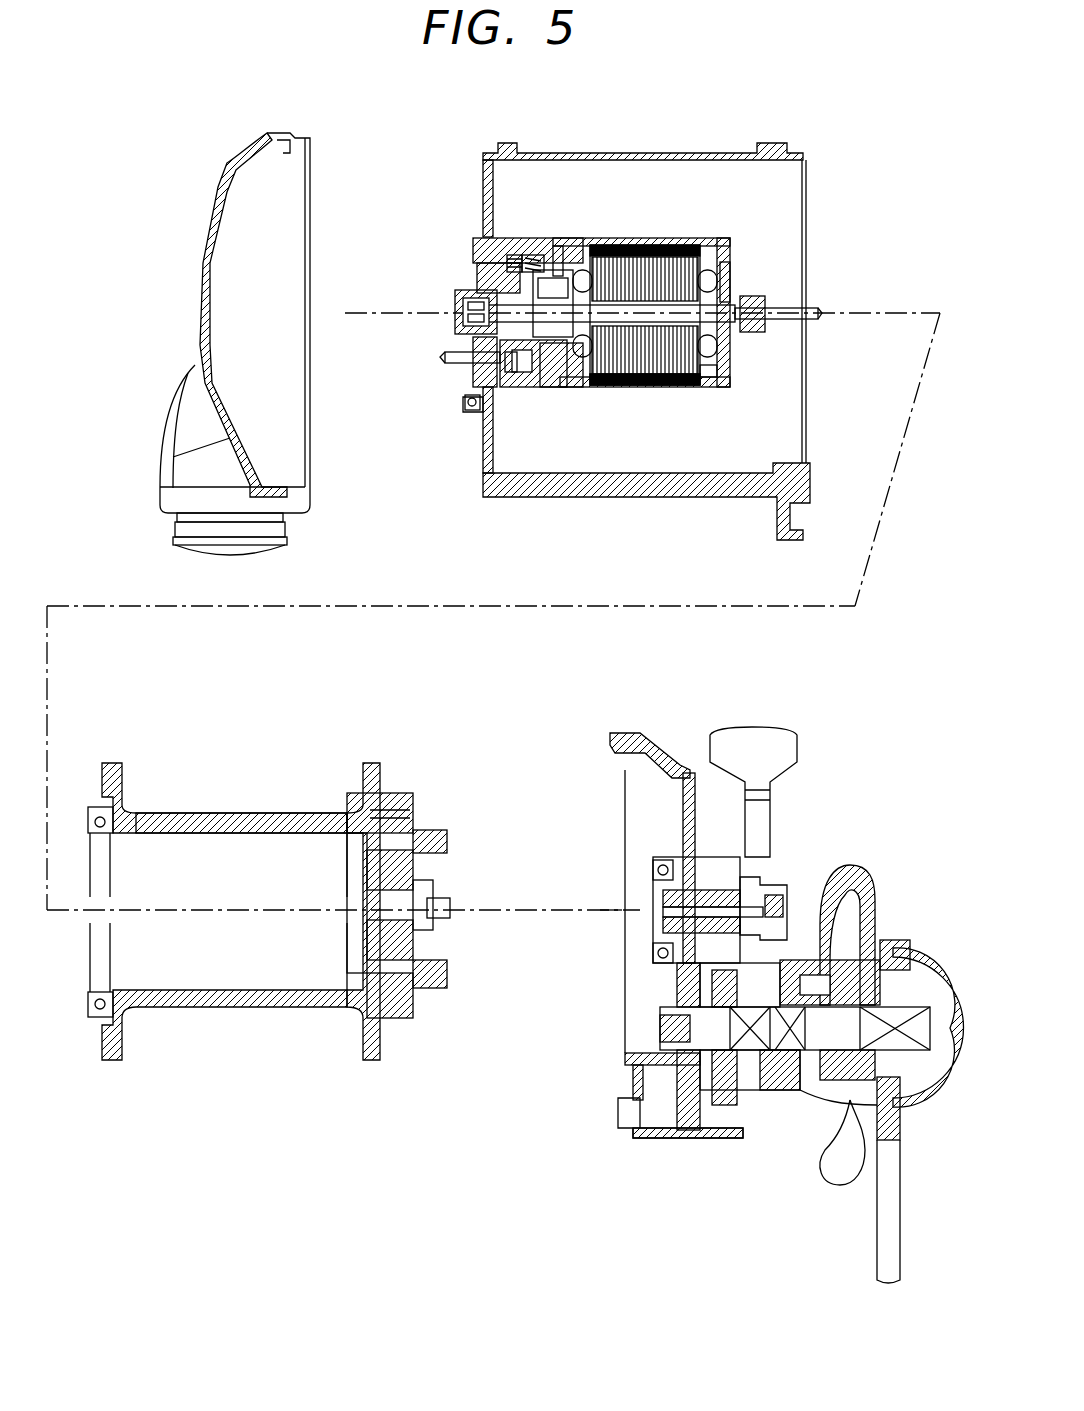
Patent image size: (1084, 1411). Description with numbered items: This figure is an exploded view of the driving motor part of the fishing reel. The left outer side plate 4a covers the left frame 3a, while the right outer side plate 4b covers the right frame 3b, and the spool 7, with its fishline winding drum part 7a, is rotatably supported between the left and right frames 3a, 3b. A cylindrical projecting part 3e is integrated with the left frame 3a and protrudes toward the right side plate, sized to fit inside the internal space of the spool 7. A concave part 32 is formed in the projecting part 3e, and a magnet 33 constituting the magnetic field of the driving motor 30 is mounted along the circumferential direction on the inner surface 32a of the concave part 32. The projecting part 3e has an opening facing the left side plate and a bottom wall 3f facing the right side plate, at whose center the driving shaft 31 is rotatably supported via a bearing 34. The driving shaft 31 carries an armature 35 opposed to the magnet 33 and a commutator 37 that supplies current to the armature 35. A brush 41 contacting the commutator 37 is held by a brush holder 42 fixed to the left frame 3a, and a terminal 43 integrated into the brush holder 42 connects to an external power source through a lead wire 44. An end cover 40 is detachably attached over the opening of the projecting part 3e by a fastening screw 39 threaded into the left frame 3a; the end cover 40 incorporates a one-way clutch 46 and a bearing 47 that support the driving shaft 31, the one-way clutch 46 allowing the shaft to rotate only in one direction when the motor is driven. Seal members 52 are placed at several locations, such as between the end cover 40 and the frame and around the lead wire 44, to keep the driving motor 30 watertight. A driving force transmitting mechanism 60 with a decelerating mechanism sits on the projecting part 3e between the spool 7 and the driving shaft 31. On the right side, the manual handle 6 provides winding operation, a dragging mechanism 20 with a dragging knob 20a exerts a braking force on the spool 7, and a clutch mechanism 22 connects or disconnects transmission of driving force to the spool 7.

The left frame 3a is at (485, 437).
The right frame 3b is at (705, 772).
The projecting part 3e is at (560, 250).
The bottom wall 3f is at (738, 376).
The left outer side plate 4a is at (205, 238).
The right outer side plate 4b is at (672, 762).
The manual handle 6 is at (892, 1180).
The spool 7 is at (160, 813).
The fishline winding drum part 7a is at (245, 813).
The dragging mechanism 20 is at (805, 968).
The dragging knob 20a is at (842, 1178).
The clutch mechanism 22 is at (728, 868).
The driving motor 30 is at (683, 215).
The driving shaft 31 is at (785, 312).
The concave part 32 is at (620, 245).
The inner surface 32a is at (698, 378).
The magnet 33 is at (640, 388).
The bearing 34 is at (765, 332).
The armature 35 is at (722, 275).
The commutator 37 is at (565, 400).
The fastening screw 39 is at (512, 255).
The end cover 40 is at (475, 240).
The brush 41 is at (545, 400).
The brush holder 42 is at (530, 258).
The terminal 43 is at (528, 400).
The lead wire 44 is at (470, 368).
The one-way clutch 46 is at (477, 285).
The bearing 47 is at (457, 322).
The seal member 52 is at (455, 350).
The driving force transmitting mechanism 60 is at (440, 830).